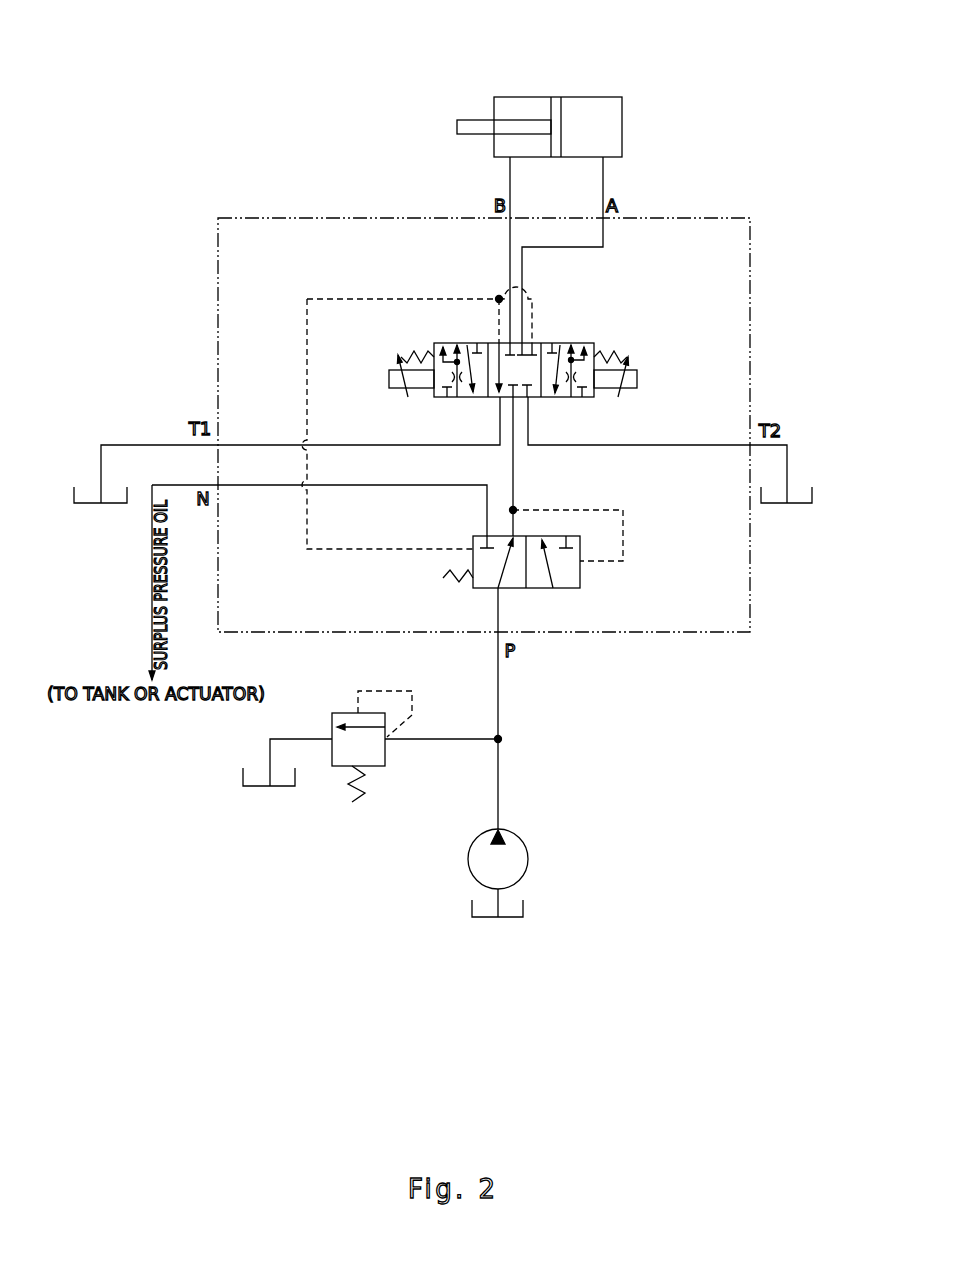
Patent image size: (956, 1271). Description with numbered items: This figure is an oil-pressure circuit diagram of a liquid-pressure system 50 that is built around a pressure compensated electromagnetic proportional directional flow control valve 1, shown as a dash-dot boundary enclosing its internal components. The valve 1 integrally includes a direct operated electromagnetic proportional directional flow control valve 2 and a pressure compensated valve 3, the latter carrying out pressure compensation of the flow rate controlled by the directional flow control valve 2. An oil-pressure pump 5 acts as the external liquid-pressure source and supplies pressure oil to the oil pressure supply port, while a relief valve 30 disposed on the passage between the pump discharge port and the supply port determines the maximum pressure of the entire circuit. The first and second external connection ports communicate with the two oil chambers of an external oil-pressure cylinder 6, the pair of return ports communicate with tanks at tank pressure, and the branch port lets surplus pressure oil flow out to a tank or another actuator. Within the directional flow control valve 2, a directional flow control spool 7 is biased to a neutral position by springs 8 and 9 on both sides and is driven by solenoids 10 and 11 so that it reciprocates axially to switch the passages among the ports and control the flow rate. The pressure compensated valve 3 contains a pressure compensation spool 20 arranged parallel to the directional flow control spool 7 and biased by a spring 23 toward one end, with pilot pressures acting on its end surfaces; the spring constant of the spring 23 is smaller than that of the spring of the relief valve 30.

The liquid-pressure system 50 is at (216, 128).
The pressure compensated electromagnetic proportional directional flow control valve 1 is at (214, 235).
The electromagnetic proportional directional flow control valve 2 is at (501, 396).
The pressure compensated valve 3 is at (548, 571).
The oil-pressure pump 5 is at (468, 860).
The oil-pressure cylinder 6 is at (577, 97).
The directional flow control spool 7 is at (438, 397).
The spring 8 is at (615, 355).
The spring 9 is at (415, 355).
The solenoid 10 is at (637, 379).
The solenoid 11 is at (389, 378).
The pressure compensation spool 20 is at (540, 589).
The spring 23 is at (463, 580).
The relief valve 30 is at (343, 767).